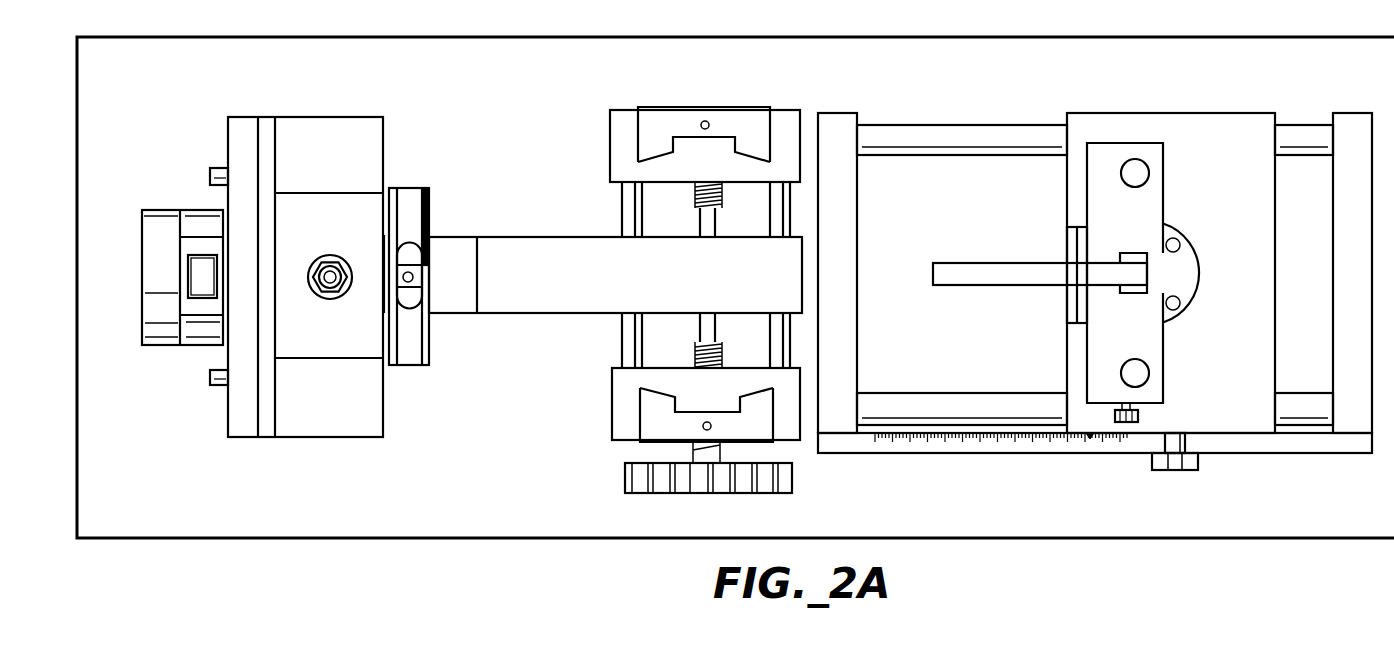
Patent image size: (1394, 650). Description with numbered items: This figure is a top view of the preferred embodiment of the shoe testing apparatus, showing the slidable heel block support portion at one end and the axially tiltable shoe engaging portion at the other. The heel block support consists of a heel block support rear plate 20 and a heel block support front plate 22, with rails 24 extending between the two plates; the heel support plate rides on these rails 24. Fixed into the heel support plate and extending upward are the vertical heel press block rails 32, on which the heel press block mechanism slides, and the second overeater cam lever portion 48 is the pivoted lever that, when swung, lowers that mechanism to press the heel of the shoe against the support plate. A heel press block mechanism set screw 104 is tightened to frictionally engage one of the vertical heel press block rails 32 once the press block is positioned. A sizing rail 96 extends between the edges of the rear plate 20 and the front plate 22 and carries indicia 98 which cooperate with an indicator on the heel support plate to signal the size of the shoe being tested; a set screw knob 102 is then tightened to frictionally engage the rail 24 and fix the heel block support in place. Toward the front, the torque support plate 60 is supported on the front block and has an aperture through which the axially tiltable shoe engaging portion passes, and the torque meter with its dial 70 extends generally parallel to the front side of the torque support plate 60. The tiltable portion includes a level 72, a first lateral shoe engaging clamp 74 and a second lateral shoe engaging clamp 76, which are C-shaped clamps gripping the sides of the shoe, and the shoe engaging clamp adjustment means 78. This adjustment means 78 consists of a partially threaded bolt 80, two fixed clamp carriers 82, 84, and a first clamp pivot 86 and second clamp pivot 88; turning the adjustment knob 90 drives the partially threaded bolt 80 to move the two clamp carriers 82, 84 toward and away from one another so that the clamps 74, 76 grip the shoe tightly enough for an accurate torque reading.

The heel block support rear plate 20 is at (1352, 128).
The heel block support front plate 22 is at (838, 128).
The rails 24 is at (922, 130).
The vertical heel press block rails 32 is at (1137, 170).
The second overeater cam lever portion 48 is at (963, 270).
The torque support plate 60 is at (245, 133).
The dial 70 is at (160, 225).
The level 72 is at (405, 192).
The first lateral shoe engaging clamp 74 is at (760, 427).
The second lateral shoe engaging clamp 76 is at (753, 130).
The shoe engaging clamp adjustment means 78 is at (597, 197).
The partially threaded bolt 80 is at (703, 320).
The fixed clamp carrier 82 is at (623, 425).
The fixed clamp carrier 84 is at (630, 130).
The first clamp pivot 86 is at (700, 428).
The second clamp pivot 88 is at (705, 120).
The adjustment knob 90 is at (693, 477).
The sizing rail 96 is at (1140, 445).
The indicia 98 is at (1030, 443).
The set screw knob 102 is at (1173, 470).
The heel press block mechanism set screw 104 is at (1142, 417).